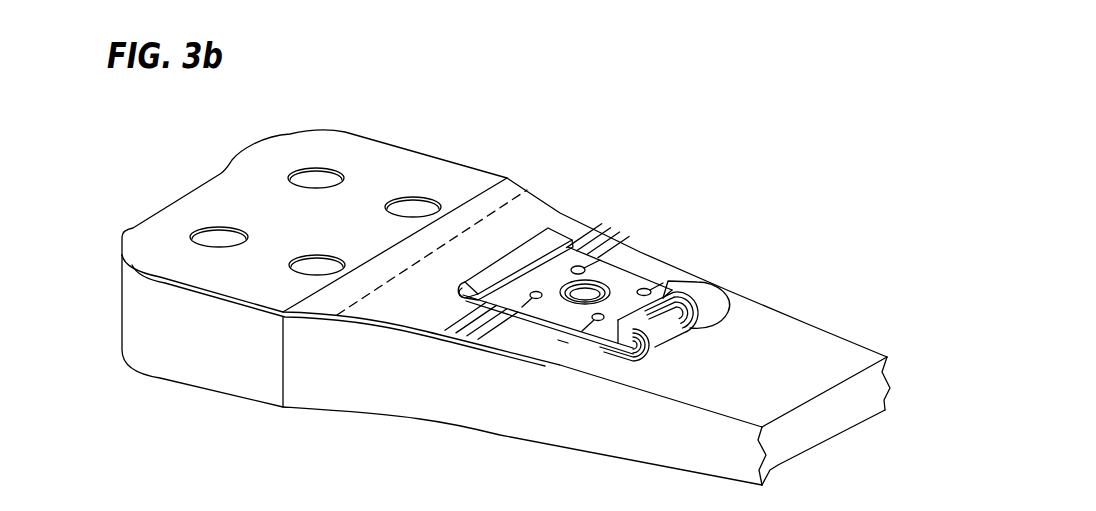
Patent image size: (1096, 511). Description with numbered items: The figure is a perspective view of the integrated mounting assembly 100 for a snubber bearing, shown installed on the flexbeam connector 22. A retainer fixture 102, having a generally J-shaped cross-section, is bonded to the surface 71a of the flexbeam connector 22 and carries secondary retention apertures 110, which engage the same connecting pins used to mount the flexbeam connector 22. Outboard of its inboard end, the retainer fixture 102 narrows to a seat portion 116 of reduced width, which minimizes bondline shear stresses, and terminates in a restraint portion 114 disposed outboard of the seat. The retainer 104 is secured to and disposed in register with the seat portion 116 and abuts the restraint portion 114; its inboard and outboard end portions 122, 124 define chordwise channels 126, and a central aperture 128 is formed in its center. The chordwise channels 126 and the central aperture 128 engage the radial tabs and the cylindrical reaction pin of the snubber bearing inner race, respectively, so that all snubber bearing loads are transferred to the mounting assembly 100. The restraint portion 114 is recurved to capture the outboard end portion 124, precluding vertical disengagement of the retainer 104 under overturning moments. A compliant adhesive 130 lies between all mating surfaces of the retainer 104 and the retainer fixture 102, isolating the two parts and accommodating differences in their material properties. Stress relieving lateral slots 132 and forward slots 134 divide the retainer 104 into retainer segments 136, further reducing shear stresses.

The flexbeam connector 22 is at (515, 409).
The surface of the flexbeam connector 71a is at (727, 408).
The mounting assembly 100 is at (738, 266).
The retainer fixture 102 is at (478, 264).
The retainer 104 is at (562, 286).
The secondary retention apertures 110 is at (327, 167).
The restraint portion 114 is at (654, 326).
The seat portion 116 is at (563, 342).
The inboard end portion 122 is at (540, 247).
The outboard end portion 124 is at (656, 343).
The chordwise channels 126 is at (461, 295).
The central aperture 128 is at (597, 279).
The compliant adhesive 130 is at (634, 358).
The lateral slots 132 is at (670, 283).
The forward slots 134 is at (728, 288).
The retainer segments 136 is at (574, 258).